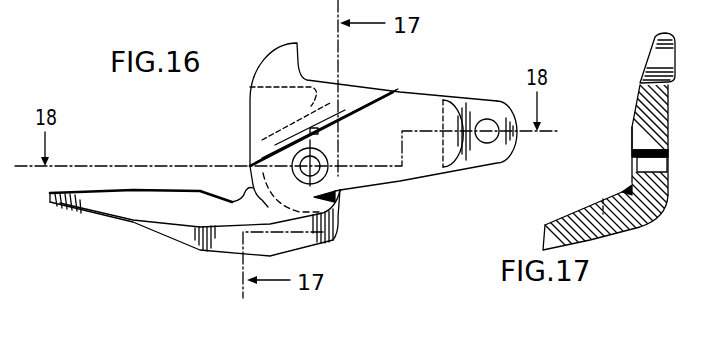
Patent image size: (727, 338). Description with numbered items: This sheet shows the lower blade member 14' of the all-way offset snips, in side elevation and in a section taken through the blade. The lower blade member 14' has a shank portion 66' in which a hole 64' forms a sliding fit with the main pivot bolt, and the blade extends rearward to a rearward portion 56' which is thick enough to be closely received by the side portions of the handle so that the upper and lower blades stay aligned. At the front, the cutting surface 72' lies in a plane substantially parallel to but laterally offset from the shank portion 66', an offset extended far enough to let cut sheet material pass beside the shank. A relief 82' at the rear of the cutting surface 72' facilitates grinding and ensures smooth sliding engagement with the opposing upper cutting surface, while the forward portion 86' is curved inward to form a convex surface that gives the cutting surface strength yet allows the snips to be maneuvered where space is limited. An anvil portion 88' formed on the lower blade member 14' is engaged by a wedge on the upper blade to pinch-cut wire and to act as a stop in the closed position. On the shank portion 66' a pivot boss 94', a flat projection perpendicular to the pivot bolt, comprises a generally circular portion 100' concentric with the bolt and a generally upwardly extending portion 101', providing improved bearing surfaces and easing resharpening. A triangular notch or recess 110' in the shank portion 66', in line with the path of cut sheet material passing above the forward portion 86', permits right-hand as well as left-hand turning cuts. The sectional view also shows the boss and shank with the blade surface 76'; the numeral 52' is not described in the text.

In FIG. 16, the lower blade member 14' is at (222, 207).
In FIG. 17, the lower blade member 14' is at (608, 213).
In FIG. 16, the hole 52' is at (493, 105).
In FIG. 16, the rearward portion 56' is at (428, 145).
In FIG. 16, the hole 64' is at (308, 127).
In FIG. 17, the hole 64' is at (670, 172).
In FIG. 16, the shank portion 66' is at (261, 100).
In FIG. 17, the shank portion 66' is at (618, 147).
In FIG. 16, the cutting surface 72' is at (141, 171).
In FIG. 17, the blade bottom surface 76' is at (605, 234).
In FIG. 16, the relief 82' is at (234, 185).
In FIG. 16, the forward portion 86' is at (195, 221).
In FIG. 17, the forward portion 86' is at (608, 210).
In FIG. 16, the anvil portion 88' is at (373, 117).
In FIG. 17, the anvil portion 88' is at (642, 57).
In FIG. 16, the pivot boss 94' is at (263, 81).
In FIG. 17, the pivot boss 94' is at (663, 120).
In FIG. 16, the circular portion 100' is at (274, 124).
In FIG. 16, the upwardly extending portion 101' is at (355, 76).
In FIG. 16, the triangular notch or recess 110' is at (357, 205).
In FIG. 17, the triangular notch or recess 110' is at (611, 184).